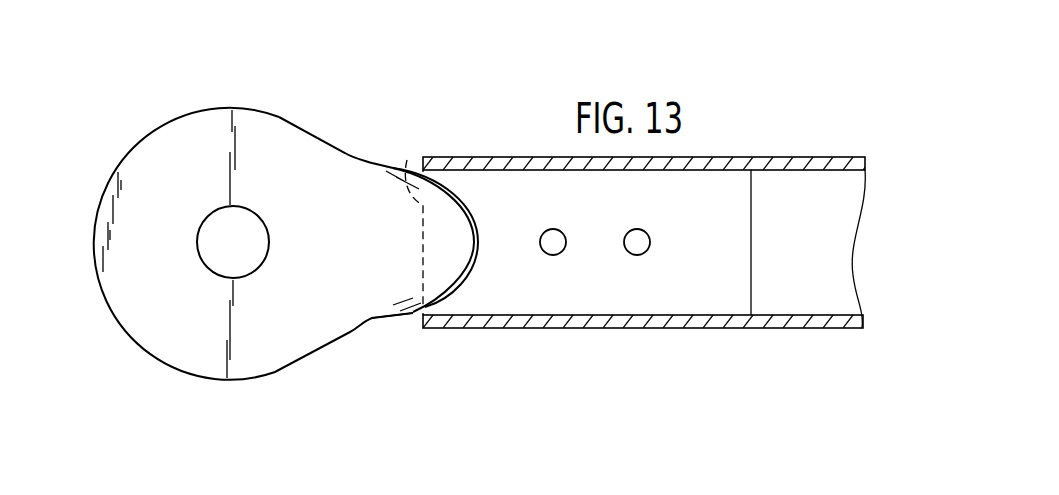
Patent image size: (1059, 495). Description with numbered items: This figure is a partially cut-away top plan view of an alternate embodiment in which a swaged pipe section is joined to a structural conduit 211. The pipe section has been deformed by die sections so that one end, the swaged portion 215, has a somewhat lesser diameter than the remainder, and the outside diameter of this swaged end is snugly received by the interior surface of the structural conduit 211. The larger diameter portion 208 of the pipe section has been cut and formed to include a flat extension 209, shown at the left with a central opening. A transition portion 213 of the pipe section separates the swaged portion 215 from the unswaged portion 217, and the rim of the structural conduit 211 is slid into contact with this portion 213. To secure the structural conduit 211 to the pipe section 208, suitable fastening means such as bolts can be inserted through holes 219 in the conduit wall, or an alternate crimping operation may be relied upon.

The larger diameter portion 208 is at (413, 315).
The flat extension 209 is at (287, 147).
The structural conduit 211 is at (797, 157).
The portion of pipe section 213 is at (407, 160).
The swaged portion 215 is at (525, 285).
The unswaged portion 217 is at (387, 163).
The holes 219 is at (628, 232).